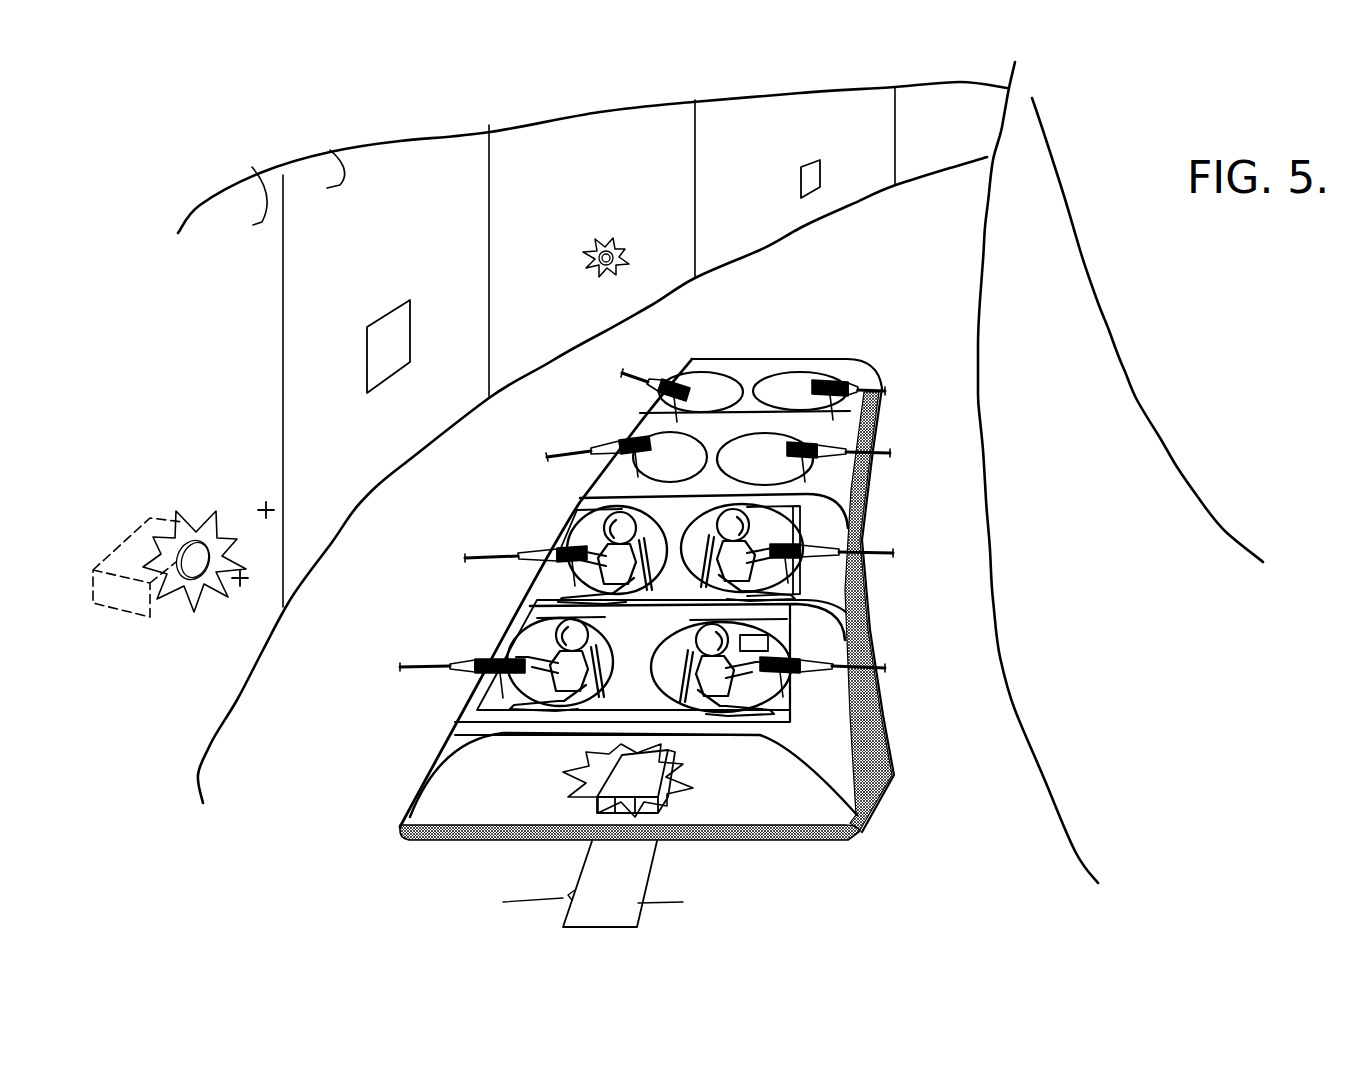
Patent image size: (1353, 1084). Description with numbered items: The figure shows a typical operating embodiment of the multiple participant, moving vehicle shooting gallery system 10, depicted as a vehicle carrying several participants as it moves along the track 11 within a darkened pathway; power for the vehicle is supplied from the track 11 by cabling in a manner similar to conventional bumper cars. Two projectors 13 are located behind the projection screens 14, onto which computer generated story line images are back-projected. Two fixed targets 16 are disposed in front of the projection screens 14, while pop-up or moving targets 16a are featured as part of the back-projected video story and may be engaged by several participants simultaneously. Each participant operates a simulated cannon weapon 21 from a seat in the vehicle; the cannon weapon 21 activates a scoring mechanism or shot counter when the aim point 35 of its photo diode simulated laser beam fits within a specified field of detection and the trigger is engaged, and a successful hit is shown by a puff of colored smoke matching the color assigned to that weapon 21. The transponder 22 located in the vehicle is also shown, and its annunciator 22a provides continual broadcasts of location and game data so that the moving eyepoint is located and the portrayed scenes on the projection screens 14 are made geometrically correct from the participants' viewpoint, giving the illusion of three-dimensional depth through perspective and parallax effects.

The multiple participant, moving vehicle shooting gallery system 10 is at (1113, 745).
The track 11 is at (580, 887).
The projector 13 is at (597, 245).
The projection screen 14 is at (330, 150).
The fixed target 16 is at (400, 317).
The pop-up target 16a is at (240, 585).
The cannon weapon 21 is at (468, 672).
The transponder 22 is at (575, 778).
The annunciator 22a is at (770, 643).
The aim point 35 is at (272, 507).